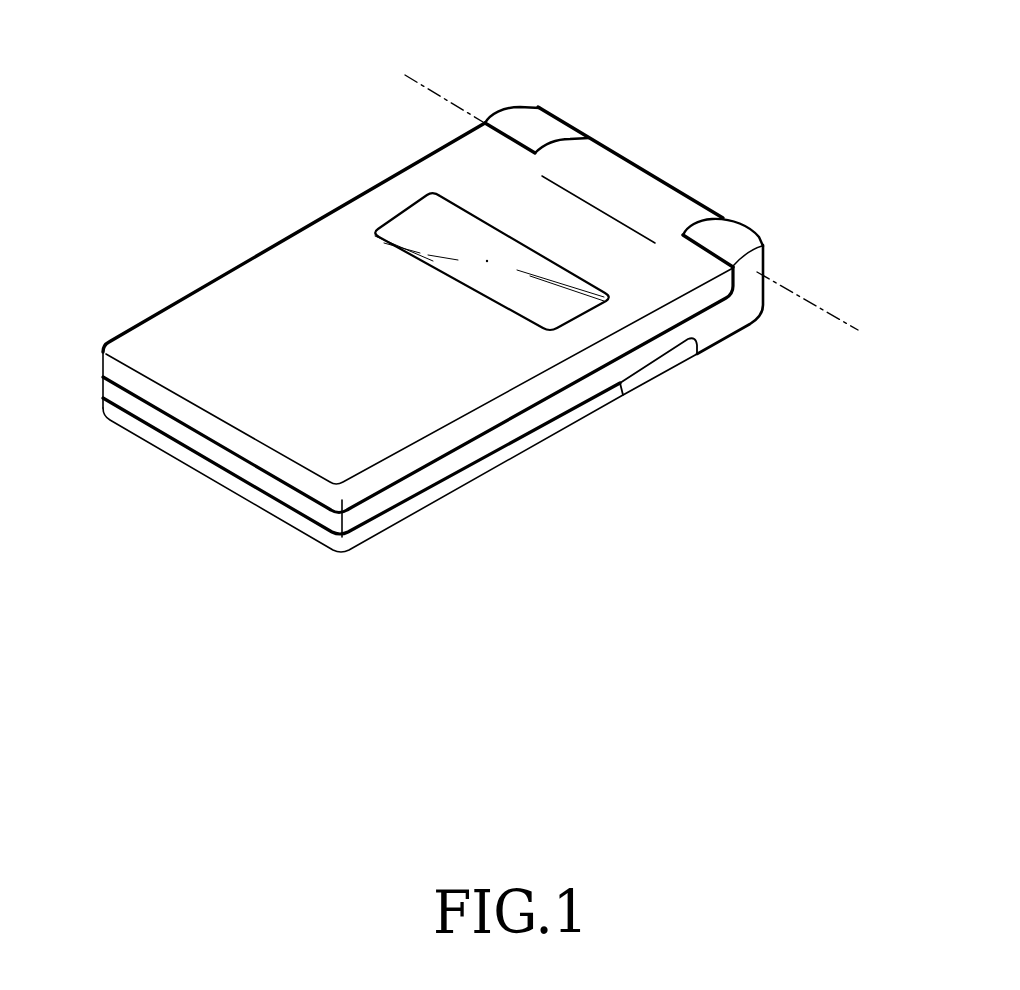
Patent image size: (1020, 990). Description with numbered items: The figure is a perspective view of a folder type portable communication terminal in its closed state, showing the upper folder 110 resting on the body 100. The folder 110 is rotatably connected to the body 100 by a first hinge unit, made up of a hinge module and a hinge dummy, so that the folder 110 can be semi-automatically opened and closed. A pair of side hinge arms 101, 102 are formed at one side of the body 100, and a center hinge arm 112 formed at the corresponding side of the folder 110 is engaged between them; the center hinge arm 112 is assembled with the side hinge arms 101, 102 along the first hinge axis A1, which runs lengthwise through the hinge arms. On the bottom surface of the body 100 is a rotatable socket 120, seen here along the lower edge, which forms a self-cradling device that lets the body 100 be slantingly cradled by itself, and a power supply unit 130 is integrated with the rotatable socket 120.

The body 100 is at (752, 348).
The folder 110 is at (158, 278).
The side hinge arm 101 is at (733, 238).
The side hinge arm 102 is at (530, 127).
The center hinge arm 112 is at (640, 186).
The rotatable socket 120 is at (678, 357).
The power supply unit 130 is at (465, 476).
The first hinge axis A1 is at (648, 211).